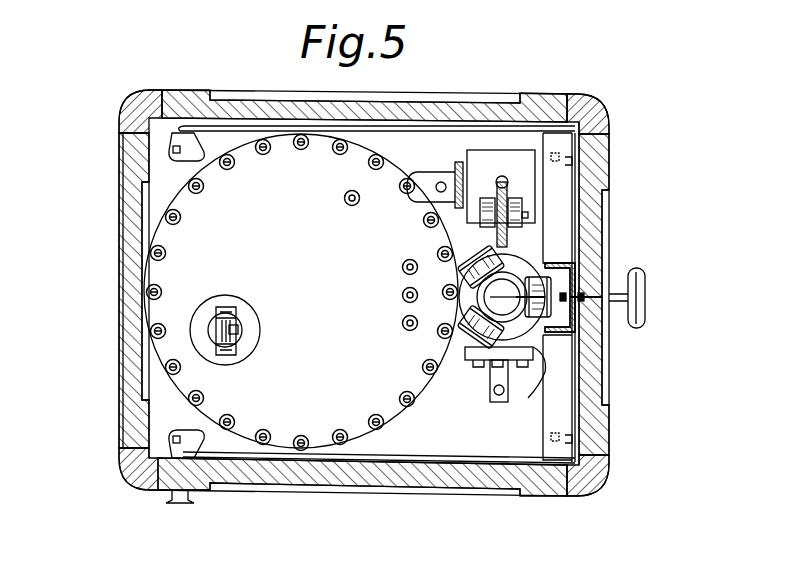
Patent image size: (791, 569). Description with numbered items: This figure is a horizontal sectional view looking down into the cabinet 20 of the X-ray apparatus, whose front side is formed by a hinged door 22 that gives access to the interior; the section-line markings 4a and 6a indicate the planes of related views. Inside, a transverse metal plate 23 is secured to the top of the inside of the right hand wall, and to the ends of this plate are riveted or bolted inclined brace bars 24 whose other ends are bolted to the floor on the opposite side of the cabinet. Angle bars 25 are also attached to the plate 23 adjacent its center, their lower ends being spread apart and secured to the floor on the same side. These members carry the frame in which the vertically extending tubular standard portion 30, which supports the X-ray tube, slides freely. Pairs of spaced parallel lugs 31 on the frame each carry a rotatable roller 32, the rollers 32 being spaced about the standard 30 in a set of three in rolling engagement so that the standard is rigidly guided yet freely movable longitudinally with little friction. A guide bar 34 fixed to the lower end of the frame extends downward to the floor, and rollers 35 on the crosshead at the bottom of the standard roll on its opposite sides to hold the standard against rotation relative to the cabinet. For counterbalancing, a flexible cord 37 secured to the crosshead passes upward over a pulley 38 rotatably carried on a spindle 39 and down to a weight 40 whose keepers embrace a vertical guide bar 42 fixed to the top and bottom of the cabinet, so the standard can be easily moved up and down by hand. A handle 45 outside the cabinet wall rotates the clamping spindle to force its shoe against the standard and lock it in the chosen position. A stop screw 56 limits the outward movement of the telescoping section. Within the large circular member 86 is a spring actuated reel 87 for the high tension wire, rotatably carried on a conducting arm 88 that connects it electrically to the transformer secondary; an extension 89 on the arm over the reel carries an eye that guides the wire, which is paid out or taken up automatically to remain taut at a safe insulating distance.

The cabinet 20 is at (610, 188).
The hinged door 22 is at (531, 495).
The transverse metal plate 23 is at (584, 222).
The inclined brace bars 24 is at (327, 133).
The angle bars 25 is at (568, 246).
The standard portion 30 is at (512, 272).
The lugs 31 is at (459, 263).
The rollers 32 is at (478, 252).
The guide bar 34 is at (485, 380).
The rollers 35 is at (467, 362).
The flexible member or cord 37 is at (530, 236).
The pulley 38 is at (511, 193).
The spindle 39 is at (478, 210).
The weight 40 is at (468, 169).
The guide bar 42 is at (440, 161).
The handle 45 is at (646, 285).
The stop screw 56 is at (528, 383).
The disc 86 is at (301, 292).
The spring actuated pulley or reel 87 is at (217, 353).
The conducting arm 88 is at (243, 330).
The extension 89 is at (240, 329).
The section line 4a is at (119, 457).
The section line 6a is at (648, 298).